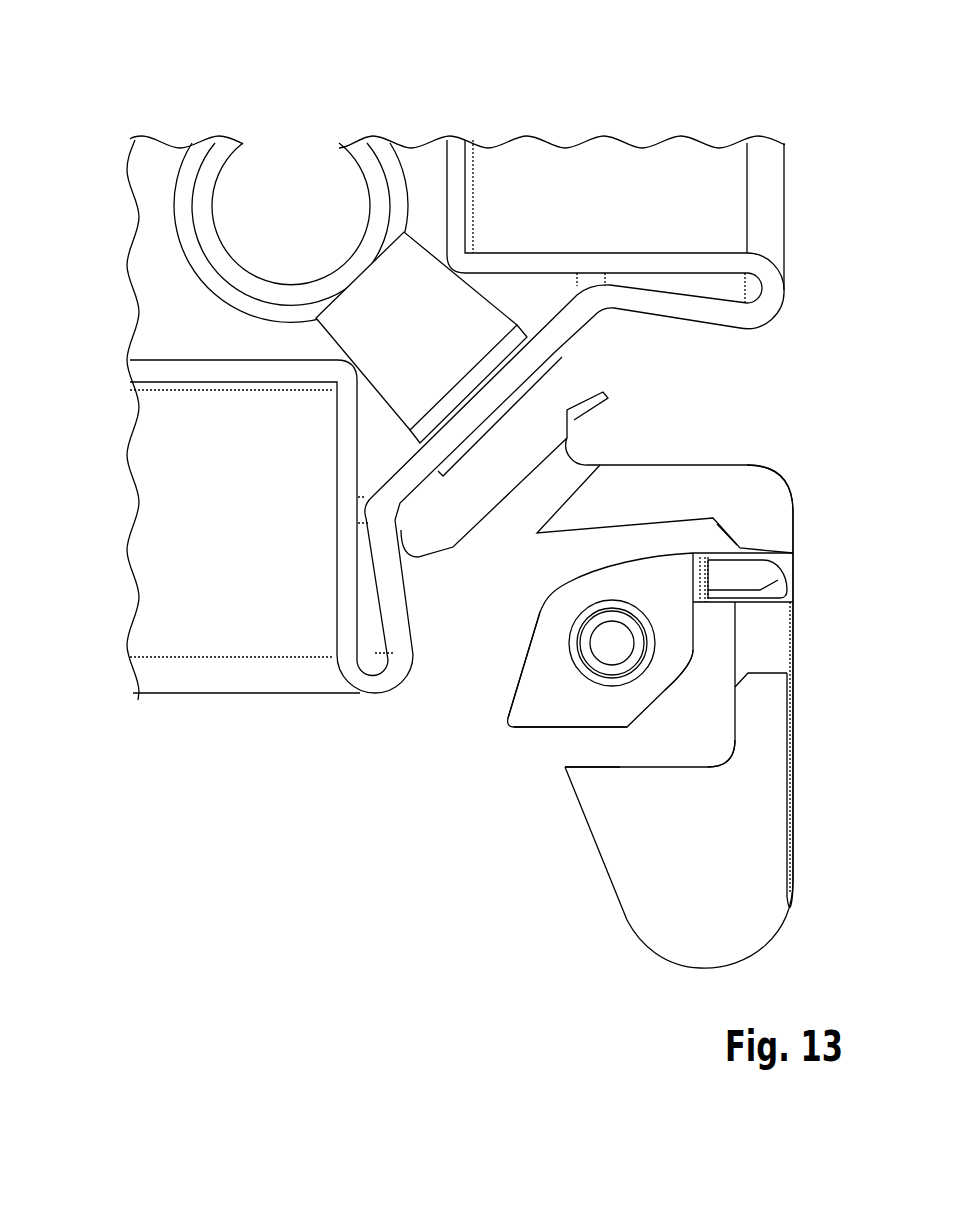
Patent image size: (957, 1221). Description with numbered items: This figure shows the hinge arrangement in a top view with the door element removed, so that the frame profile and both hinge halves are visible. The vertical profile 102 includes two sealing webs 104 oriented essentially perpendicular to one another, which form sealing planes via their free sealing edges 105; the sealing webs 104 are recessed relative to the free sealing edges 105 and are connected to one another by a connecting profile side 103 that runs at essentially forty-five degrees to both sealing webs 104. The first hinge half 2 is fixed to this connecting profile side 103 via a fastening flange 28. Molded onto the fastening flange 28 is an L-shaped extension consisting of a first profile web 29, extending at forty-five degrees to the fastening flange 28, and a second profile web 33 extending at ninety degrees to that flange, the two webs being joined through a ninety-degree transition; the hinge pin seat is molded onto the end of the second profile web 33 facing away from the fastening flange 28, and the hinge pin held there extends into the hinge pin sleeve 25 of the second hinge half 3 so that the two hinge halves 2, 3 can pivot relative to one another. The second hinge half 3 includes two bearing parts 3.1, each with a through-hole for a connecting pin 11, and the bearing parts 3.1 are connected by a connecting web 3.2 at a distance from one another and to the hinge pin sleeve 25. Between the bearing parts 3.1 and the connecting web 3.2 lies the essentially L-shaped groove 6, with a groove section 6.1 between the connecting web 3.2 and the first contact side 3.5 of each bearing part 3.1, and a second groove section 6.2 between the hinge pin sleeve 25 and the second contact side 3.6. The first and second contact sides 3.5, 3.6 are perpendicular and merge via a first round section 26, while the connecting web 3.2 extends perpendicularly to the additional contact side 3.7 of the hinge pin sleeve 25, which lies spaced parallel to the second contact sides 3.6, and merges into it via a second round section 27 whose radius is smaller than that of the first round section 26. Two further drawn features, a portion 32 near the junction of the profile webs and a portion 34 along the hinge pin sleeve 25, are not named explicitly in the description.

The vertical profile 102 is at (468, 75).
The connecting profile side 103 is at (567, 320).
The sealing webs 104 is at (684, 160).
The free sealing edges 105 is at (786, 144).
The first hinge half 2 is at (682, 405).
The fastening flange 28 is at (617, 337).
The first profile web 29 is at (633, 483).
The arm corner 32 is at (753, 497).
The second profile web 33 is at (787, 562).
The second hinge half 3 is at (480, 756).
The connecting pin 11 is at (610, 643).
The bearing parts 3.1 is at (508, 683).
The connecting web 3.2 is at (783, 666).
The first contact side 3.5 is at (694, 650).
The second contact side 3.6 is at (523, 731).
The additional contact side 3.7 is at (583, 753).
The groove 6 is at (717, 705).
The groove section 6.1 is at (717, 621).
The second groove section 6.2 is at (663, 741).
The first round section 26 is at (665, 711).
The second round section 27 is at (716, 749).
The hinge pin sleeve 25 is at (603, 882).
The side wall 34 is at (787, 815).